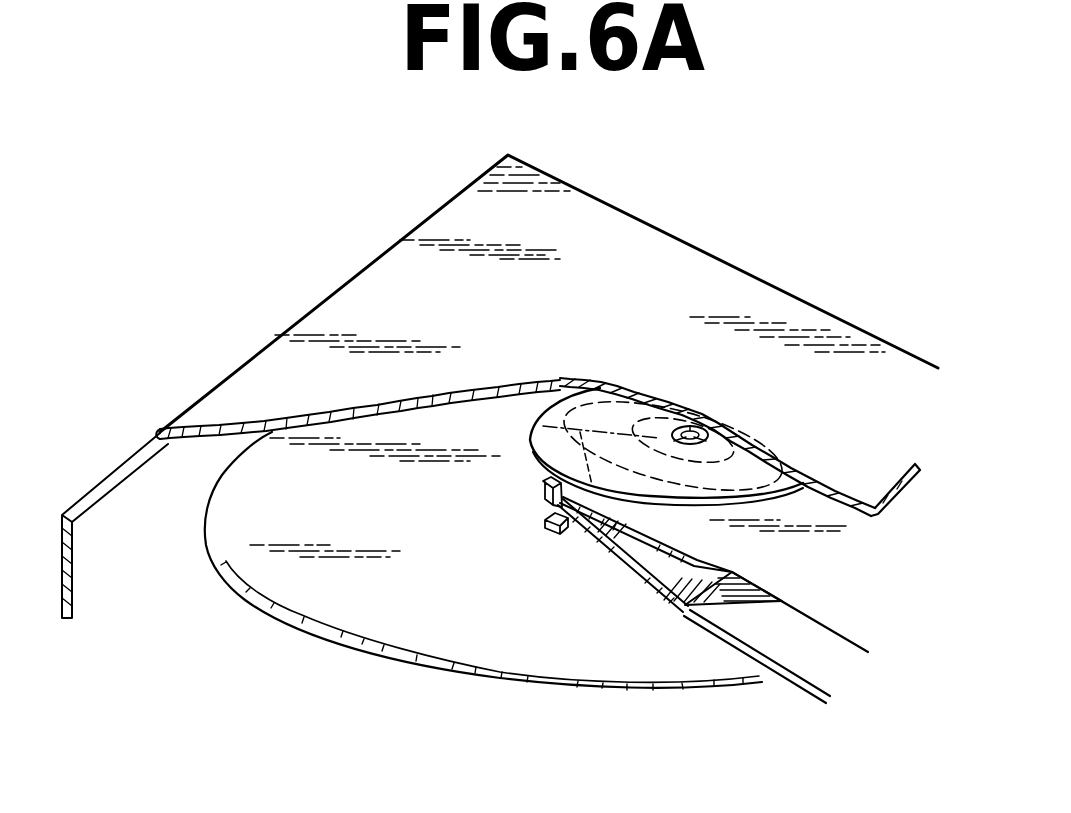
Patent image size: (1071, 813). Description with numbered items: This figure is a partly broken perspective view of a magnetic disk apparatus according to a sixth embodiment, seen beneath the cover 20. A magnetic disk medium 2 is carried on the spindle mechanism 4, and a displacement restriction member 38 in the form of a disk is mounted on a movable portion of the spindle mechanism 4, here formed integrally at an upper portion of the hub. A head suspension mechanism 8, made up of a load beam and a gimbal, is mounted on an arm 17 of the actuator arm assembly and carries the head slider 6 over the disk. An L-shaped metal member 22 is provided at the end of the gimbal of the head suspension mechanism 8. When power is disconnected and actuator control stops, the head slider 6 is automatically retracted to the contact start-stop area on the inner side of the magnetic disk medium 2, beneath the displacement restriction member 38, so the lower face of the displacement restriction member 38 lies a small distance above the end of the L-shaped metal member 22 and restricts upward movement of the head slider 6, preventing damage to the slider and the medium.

The magnetic disk medium 2 is at (290, 585).
The spindle mechanism 4 is at (627, 415).
The head slider 6 is at (549, 534).
The head suspension mechanism 8 is at (640, 565).
The arm 17 is at (817, 633).
The cover 20 is at (676, 251).
The L-shaped metal member 22 is at (545, 486).
The displacement restriction member 38 is at (550, 425).